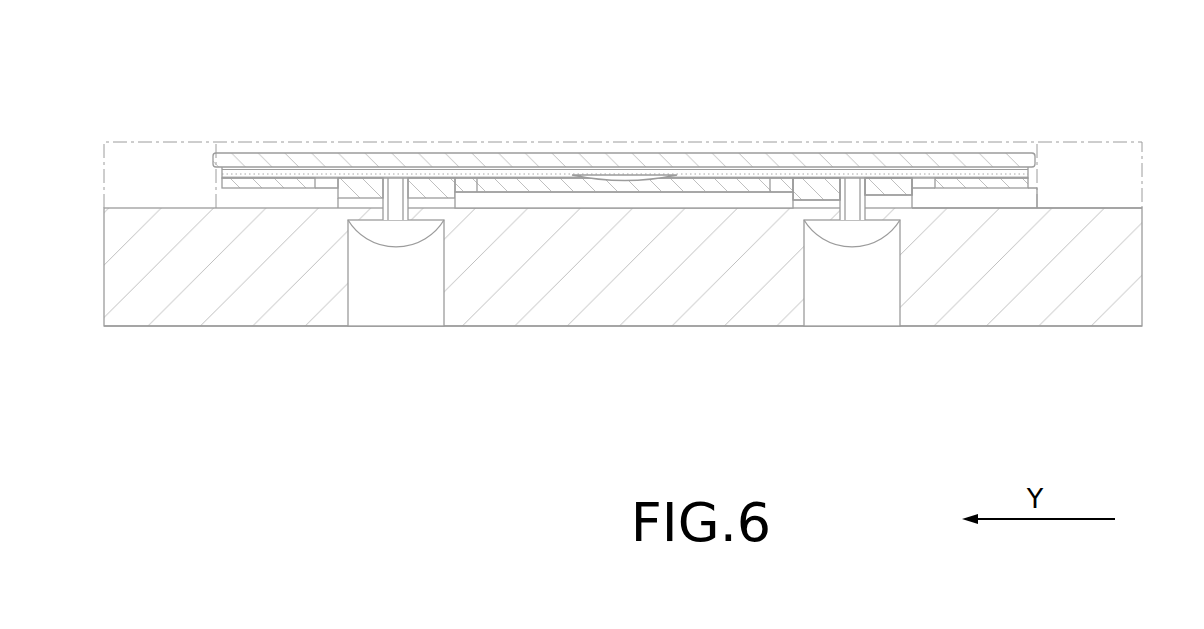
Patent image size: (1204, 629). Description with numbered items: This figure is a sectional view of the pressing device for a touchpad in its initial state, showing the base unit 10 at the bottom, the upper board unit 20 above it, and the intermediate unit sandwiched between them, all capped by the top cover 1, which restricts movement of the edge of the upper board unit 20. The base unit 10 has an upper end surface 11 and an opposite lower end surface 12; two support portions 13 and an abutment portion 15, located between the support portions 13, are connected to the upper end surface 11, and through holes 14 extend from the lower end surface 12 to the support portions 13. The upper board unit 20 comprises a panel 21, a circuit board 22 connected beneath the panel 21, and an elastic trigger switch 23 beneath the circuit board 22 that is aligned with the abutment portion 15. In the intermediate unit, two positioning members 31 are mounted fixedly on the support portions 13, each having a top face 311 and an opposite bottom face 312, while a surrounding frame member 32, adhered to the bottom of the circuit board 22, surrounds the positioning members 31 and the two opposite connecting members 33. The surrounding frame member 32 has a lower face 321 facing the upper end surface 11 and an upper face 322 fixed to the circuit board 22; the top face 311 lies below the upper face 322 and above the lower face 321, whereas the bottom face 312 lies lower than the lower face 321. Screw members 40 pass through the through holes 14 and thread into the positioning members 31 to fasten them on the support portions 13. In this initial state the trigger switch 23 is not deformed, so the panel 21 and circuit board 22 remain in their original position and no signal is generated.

The top cover 1 is at (202, 142).
The base unit 10 is at (1019, 333).
The upper end surface 11 is at (1085, 207).
The lower end surface 12 is at (955, 328).
The support portions 13 is at (440, 197).
The through holes 14 is at (850, 268).
The abutment portion 15 is at (650, 203).
The upper board unit 20 is at (624, 109).
The panel 21 is at (700, 160).
The circuit board 22 is at (555, 176).
The trigger switch 23 is at (627, 180).
The positioning members 31 is at (797, 190).
The top face 311 is at (830, 186).
The bottom face 312 is at (890, 192).
The surrounding frame member 32 is at (980, 185).
The lower face 321 is at (1002, 196).
The upper face 322 is at (950, 183).
The connecting members 33 is at (498, 187).
The screw members 40 is at (394, 254).